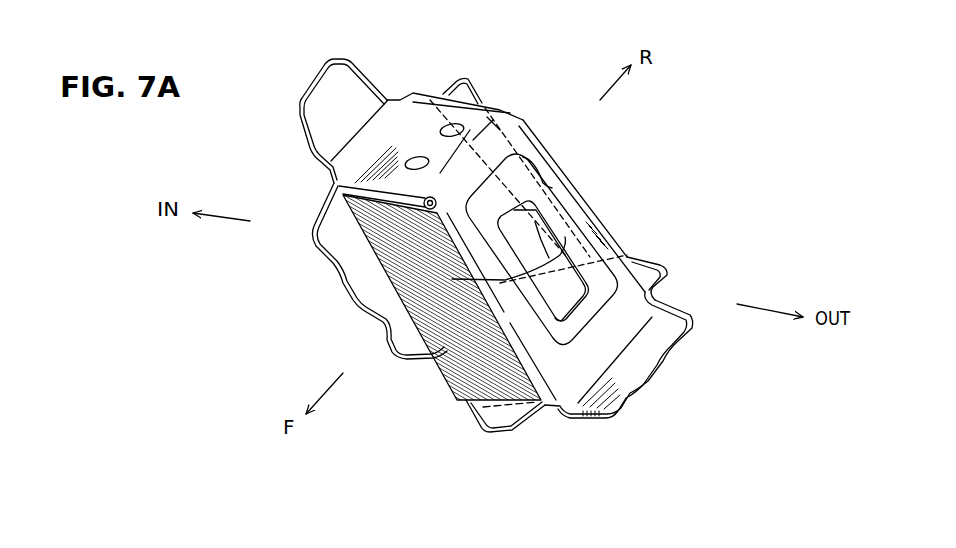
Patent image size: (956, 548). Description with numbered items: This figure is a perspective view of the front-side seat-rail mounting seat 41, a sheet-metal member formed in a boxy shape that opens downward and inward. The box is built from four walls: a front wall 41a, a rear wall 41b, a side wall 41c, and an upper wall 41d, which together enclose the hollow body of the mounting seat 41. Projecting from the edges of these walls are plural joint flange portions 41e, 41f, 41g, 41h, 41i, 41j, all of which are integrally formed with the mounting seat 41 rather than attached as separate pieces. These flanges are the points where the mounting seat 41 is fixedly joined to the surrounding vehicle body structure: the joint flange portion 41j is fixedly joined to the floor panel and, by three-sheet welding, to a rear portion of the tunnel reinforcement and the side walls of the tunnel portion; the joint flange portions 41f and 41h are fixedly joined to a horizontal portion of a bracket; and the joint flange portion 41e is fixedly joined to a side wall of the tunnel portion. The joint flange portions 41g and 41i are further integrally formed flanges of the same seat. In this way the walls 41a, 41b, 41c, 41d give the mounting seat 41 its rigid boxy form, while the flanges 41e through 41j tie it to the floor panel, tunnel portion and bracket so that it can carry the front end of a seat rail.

The front-side mounting seat 41 is at (598, 190).
The front wall 41a is at (457, 341).
The rear wall 41b is at (486, 224).
The side wall 41c is at (581, 217).
The upper wall 41d is at (398, 106).
The joint flange portion 41e is at (350, 266).
The joint flange portion 41f is at (500, 420).
The joint flange portion 41g is at (481, 90).
The joint flange portion 41h is at (647, 258).
The joint flange portion 41i is at (640, 367).
The joint flange portion 41j is at (333, 93).